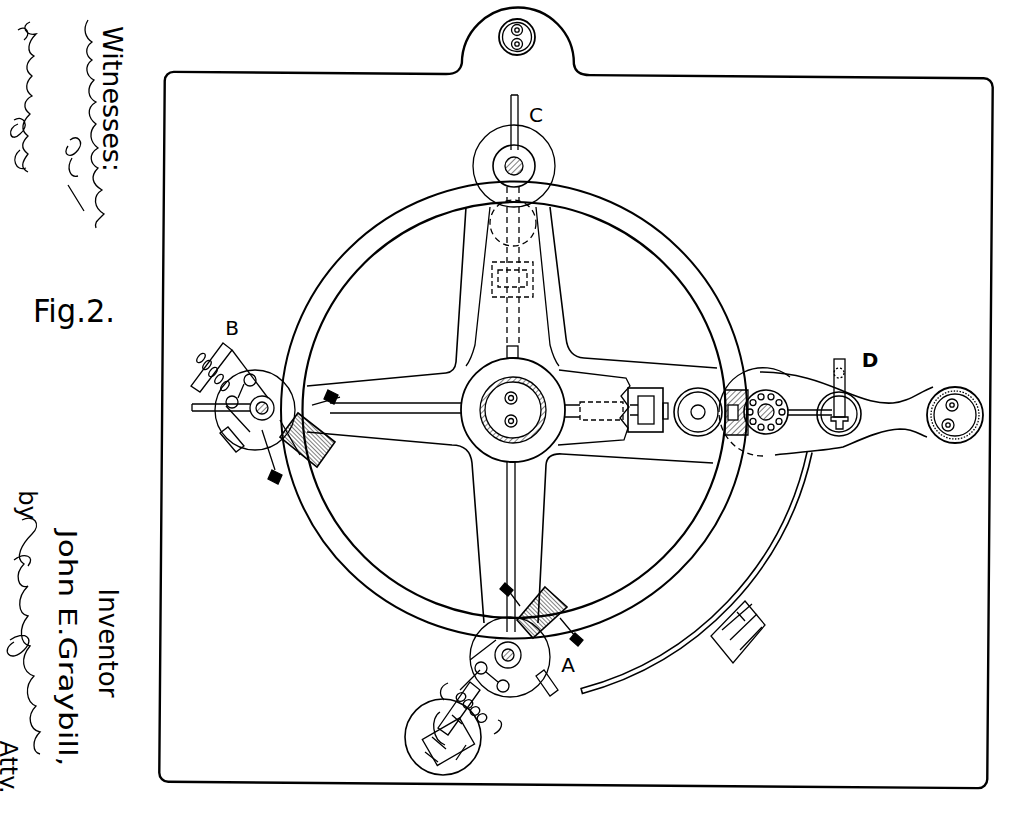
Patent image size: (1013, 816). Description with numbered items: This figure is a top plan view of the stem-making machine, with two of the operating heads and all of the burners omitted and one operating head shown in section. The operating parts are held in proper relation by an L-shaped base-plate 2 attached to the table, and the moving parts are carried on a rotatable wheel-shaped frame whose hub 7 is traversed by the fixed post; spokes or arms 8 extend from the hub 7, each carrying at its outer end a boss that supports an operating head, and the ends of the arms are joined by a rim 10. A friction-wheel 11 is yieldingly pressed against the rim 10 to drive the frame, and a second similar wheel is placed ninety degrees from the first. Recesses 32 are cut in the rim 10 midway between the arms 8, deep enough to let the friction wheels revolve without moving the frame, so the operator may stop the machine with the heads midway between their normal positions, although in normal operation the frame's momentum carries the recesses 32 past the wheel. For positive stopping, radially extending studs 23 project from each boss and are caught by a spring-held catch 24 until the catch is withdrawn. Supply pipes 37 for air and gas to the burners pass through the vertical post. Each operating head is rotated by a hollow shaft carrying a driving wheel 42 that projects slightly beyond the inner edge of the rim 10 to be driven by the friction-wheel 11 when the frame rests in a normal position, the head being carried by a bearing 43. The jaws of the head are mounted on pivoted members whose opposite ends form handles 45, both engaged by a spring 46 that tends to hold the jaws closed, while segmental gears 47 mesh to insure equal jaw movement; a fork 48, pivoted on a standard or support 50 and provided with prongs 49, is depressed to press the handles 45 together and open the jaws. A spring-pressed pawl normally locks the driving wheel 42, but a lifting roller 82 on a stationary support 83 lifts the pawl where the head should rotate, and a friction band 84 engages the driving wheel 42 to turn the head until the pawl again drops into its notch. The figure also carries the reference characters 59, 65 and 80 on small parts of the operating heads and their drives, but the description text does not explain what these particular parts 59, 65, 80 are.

The L-shaped base-plate 2 is at (557, 285).
The hub 7 is at (540, 442).
The spokes or arms 8 is at (540, 323).
The rim 10 is at (304, 319).
The friction-wheel 11 is at (540, 222).
The radially extending studs 23 is at (510, 112).
The catch 24 is at (840, 393).
The recesses 32 is at (365, 259).
The supply pipes 37 is at (509, 403).
The driving wheel 42 is at (473, 165).
The bearing 43 is at (768, 398).
The handles 45 is at (223, 343).
The spring 46 is at (206, 362).
The segmental gears 47 is at (249, 373).
The fork 48 is at (440, 720).
The prongs 49 is at (446, 688).
The standard or support 50 is at (422, 740).
The stop pin 59 is at (229, 445).
The gear hub 65 is at (522, 164).
The brake block 80 is at (569, 624).
The lifting roller 82 is at (666, 420).
The stationary support 83 is at (640, 388).
The friction band 84 is at (789, 527).